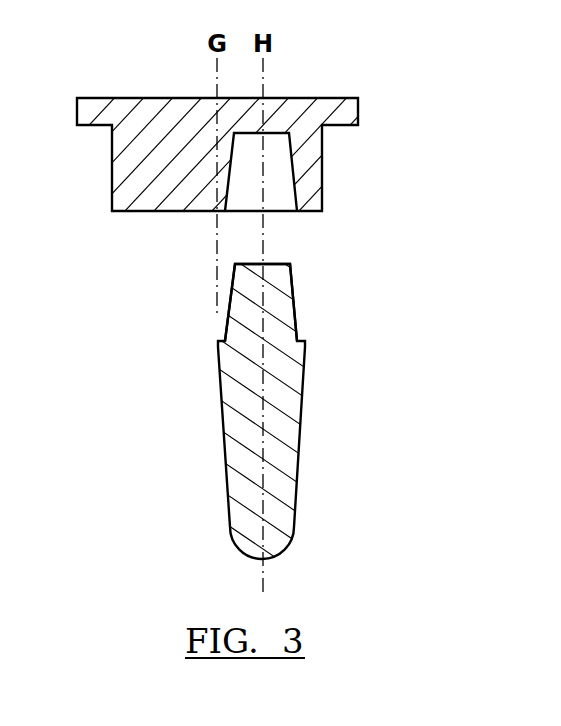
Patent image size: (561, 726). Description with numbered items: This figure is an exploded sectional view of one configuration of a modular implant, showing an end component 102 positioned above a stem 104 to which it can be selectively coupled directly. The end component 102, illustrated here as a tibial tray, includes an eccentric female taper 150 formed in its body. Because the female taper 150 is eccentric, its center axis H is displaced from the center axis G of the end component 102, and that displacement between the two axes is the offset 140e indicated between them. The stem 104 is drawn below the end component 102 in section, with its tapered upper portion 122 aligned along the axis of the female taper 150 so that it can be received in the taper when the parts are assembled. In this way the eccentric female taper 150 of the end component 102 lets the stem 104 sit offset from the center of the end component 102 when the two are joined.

The end component 102 is at (313, 78).
The eccentric female taper 150 is at (290, 148).
The offset 140e is at (165, 235).
The tapered head of pin 122 is at (290, 307).
The stem 104 is at (293, 395).